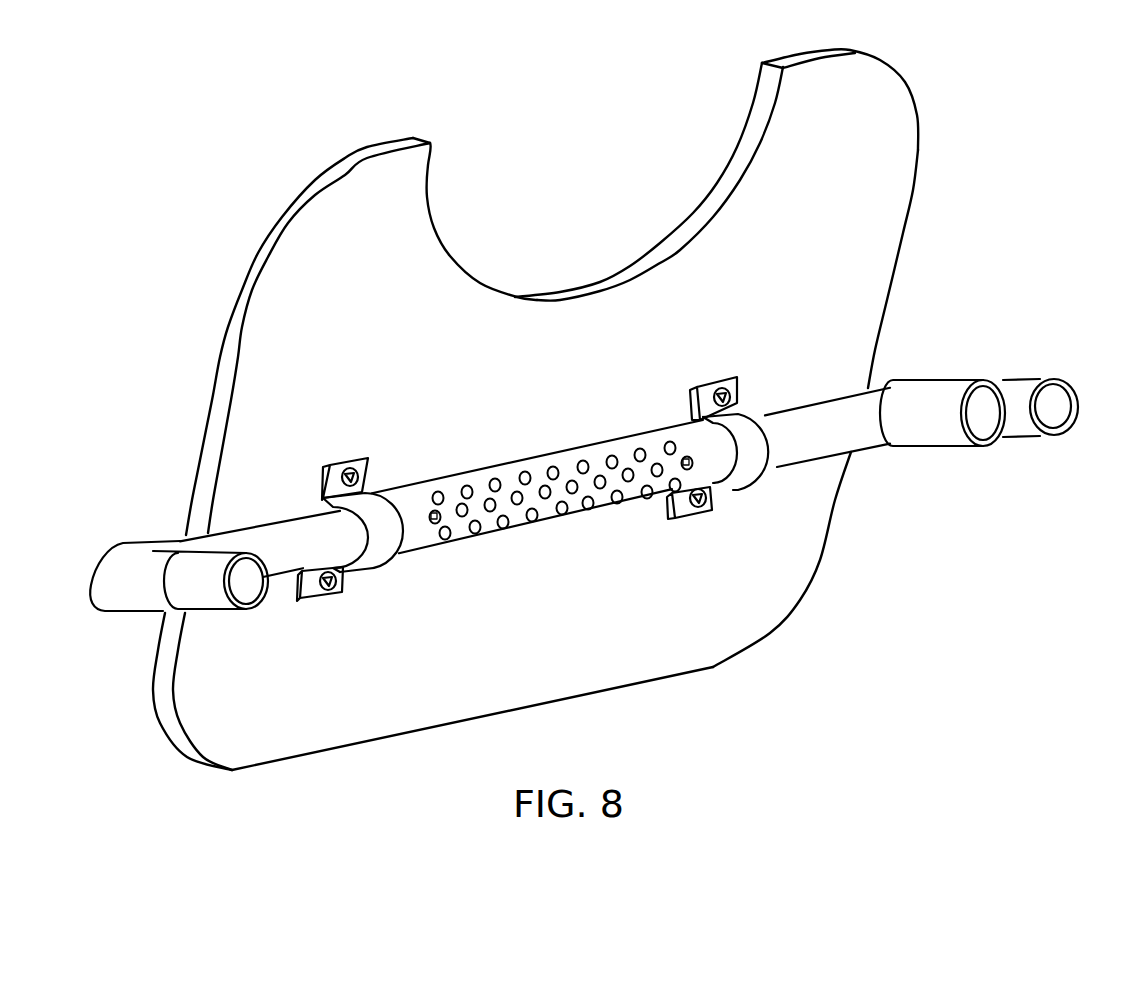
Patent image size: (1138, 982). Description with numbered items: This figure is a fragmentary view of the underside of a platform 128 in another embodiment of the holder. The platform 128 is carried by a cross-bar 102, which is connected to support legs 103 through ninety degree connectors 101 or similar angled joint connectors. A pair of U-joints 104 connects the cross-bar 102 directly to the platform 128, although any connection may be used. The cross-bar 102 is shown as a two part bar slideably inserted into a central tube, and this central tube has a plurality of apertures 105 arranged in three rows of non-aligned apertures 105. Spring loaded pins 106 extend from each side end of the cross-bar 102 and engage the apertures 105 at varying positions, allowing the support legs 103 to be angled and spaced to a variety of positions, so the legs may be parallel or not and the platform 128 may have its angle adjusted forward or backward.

The platform 128 is at (352, 192).
The 90 degree connector 101 is at (130, 585).
The cross-bar 102 is at (290, 537).
The support leg 103 is at (200, 590).
The U-joint 104 is at (366, 452).
The aperture 105 is at (553, 470).
The spring loaded pin 106 is at (433, 520).